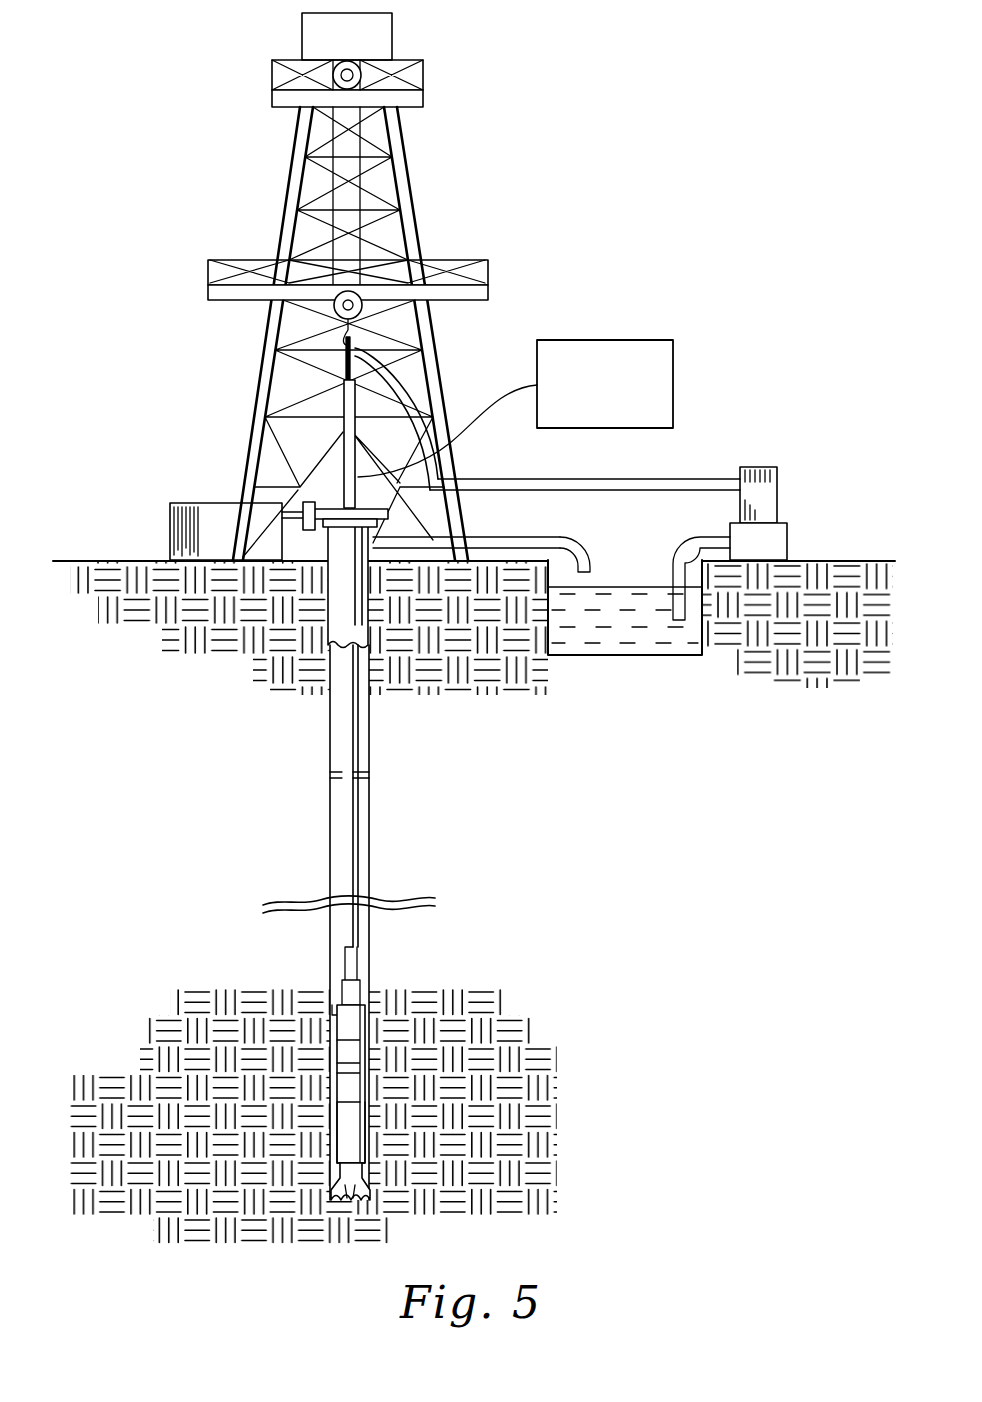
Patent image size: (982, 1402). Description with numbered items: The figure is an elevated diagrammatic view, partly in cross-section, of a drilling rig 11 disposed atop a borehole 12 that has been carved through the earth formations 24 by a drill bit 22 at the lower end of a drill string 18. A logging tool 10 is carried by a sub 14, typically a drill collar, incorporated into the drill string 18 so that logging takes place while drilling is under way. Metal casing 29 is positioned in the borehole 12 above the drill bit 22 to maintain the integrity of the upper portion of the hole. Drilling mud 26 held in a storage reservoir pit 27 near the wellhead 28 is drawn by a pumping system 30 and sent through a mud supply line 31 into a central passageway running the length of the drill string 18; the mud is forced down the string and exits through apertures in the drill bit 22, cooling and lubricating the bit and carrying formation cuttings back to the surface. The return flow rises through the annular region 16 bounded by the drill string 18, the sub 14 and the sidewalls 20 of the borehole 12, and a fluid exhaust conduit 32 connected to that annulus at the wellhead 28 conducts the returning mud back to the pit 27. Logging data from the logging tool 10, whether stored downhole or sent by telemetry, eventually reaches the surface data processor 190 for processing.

The drilling rig 11 is at (474, 179).
The surface data processor 190 is at (603, 338).
The mud supply line 31 is at (700, 473).
The pumping system 30 is at (778, 493).
The fluid exhaust conduit 32 is at (588, 547).
The wellhead 28 is at (480, 526).
The metal casing 29 is at (330, 613).
The storage reservoir pit 27 is at (572, 656).
The drilling mud 26 is at (645, 650).
The borehole 12 is at (365, 803).
The sidewalls of the borehole 20 is at (372, 853).
The drill string 18 is at (357, 937).
The annular region 16 is at (332, 1010).
The logging tool 10 is at (353, 1022).
The sub 14 is at (353, 1133).
The drill bit 22 is at (331, 1192).
The earth formations 24 is at (555, 1115).